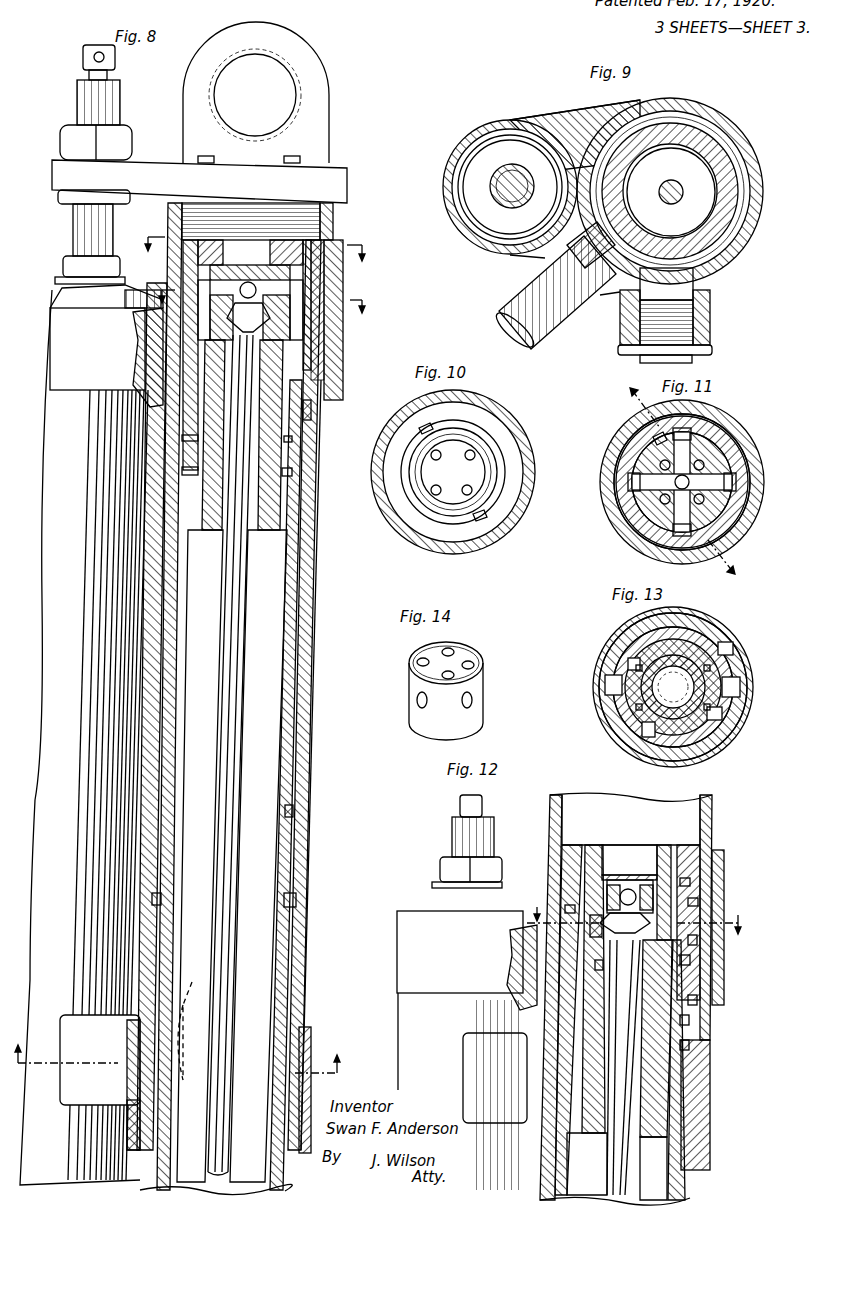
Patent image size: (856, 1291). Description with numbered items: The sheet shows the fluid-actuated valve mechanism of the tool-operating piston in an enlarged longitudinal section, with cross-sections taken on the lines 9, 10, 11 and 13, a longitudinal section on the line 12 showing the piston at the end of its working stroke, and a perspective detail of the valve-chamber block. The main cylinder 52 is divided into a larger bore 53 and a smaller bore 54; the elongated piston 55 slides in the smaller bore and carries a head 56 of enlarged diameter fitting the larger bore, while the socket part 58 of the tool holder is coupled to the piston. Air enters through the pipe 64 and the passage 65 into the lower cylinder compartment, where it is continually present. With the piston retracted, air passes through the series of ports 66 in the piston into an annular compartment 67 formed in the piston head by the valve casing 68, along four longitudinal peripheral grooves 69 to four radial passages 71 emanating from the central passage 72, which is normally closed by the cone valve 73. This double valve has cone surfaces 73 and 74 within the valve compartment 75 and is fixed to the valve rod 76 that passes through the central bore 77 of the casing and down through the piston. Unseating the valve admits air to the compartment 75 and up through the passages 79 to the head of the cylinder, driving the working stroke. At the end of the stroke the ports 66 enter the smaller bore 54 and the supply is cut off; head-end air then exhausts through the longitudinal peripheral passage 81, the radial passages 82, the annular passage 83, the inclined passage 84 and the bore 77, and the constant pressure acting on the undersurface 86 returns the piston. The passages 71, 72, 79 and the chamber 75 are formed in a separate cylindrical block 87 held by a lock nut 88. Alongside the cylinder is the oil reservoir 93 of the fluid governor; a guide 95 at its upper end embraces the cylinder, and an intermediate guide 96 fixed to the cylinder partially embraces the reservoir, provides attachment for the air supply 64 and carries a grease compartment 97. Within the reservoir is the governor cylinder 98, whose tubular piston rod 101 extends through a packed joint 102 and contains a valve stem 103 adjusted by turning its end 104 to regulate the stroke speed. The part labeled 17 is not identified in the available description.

In FIG. 8, the section line 9— 9 is at (176, 1069).
In FIG. 8, the section line 10— 10 is at (255, 239).
In FIG. 8, the section line 11— 11 is at (261, 292).
In FIG. 11, the section line 12— 12 is at (666, 490).
In FIG. 12, the section line 13— 13 is at (644, 911).
In FIG. 8, the tube 17 is at (318, 632).
In FIG. 8, the main cylinder 52 is at (328, 593).
In FIG. 9, the main cylinder 52 is at (738, 220).
In FIG. 10, the main cylinder 52 is at (394, 539).
In FIG. 11, the main cylinder 52 is at (608, 517).
In FIG. 13, the main cylinder 52 is at (625, 624).
In FIG. 12, the main cylinder 52 is at (712, 813).
In FIG. 8, the larger bore 53 is at (290, 812).
In FIG. 12, the larger bore 53 is at (689, 1020).
In FIG. 8, the smaller bore 54 is at (268, 1165).
In FIG. 12, the smaller bore 54 is at (710, 1105).
In FIG. 8, the elongated piston 55 is at (292, 709).
In FIG. 9, the elongated piston 55 is at (733, 200).
In FIG. 12, the elongated piston 55 is at (676, 1070).
In FIG. 8, the piston head 56 is at (320, 278).
In FIG. 10, the piston head 56 is at (397, 502).
In FIG. 11, the piston head 56 is at (737, 437).
In FIG. 13, the piston head 56 is at (710, 624).
In FIG. 12, the piston head 56 is at (627, 1020).
In FIG. 8, the socket part 58 is at (322, 97).
In FIG. 9, the pipe 64 is at (513, 288).
In FIG. 8, the passage 65 is at (184, 1021).
In FIG. 9, the passage 65 is at (591, 245).
In FIG. 8, the ports 66 is at (182, 438).
In FIG. 12, the ports 66 is at (689, 1045).
In FIG. 8, the annular compartment 67 is at (197, 472).
In FIG. 8, the valve casing 68 is at (285, 530).
In FIG. 10, the valve casing 68 is at (493, 500).
In FIG. 11, the valve casing 68 is at (747, 527).
In FIG. 12, the valve casing 68 is at (656, 1070).
In FIG. 8, the longitudinal peripheral grooves 69 is at (140, 323).
In FIG. 11, the longitudinal peripheral grooves 69 is at (632, 487).
In FIG. 13, the longitudinal peripheral grooves 69 is at (633, 663).
In FIG. 11, the radial passages 71 is at (645, 478).
In FIG. 14, the radial passages 71 is at (462, 702).
In FIG. 8, the central passage 72 is at (251, 282).
In FIG. 11, the central passage 72 is at (700, 470).
In FIG. 12, the central passage 72 is at (628, 897).
In FIG. 8, the cone valve 73 is at (248, 317).
In FIG. 12, the cone valve 73 is at (625, 923).
In FIG. 8, the cone surface 74 is at (320, 353).
In FIG. 8, the valve compartment 75 is at (275, 312).
In FIG. 13, the valve compartment 75 is at (676, 776).
In FIG. 12, the valve compartment 75 is at (590, 923).
In FIG. 8, the valve rod 76 is at (238, 698).
In FIG. 9, the valve rod 76 is at (672, 205).
In FIG. 12, the valve rod 76 is at (628, 1163).
In FIG. 8, the central bore 77 is at (226, 530).
In FIG. 12, the central bore 77 is at (603, 1135).
In FIG. 10, the passages 79 is at (473, 454).
In FIG. 11, the passages 79 is at (647, 460).
In FIG. 14, the passages 79 is at (444, 650).
In FIG. 12, the passages 79 is at (652, 882).
In FIG. 10, the longitudinal peripheral passage 81 is at (422, 427).
In FIG. 11, the longitudinal peripheral passage 81 is at (657, 440).
In FIG. 13, the longitudinal peripheral passage 81 is at (618, 703).
In FIG. 12, the longitudinal peripheral passage 81 is at (578, 960).
In FIG. 13, the radial passages 82 is at (612, 688).
In FIG. 12, the radial passages 82 is at (568, 913).
In FIG. 8, the annular passage 83 is at (297, 905).
In FIG. 13, the annular passage 83 is at (750, 710).
In FIG. 12, the annular passage 83 is at (697, 938).
In FIG. 13, the inclined passage 84 is at (728, 652).
In FIG. 12, the inclined passage 84 is at (690, 960).
In FIG. 8, the undersurface 86 is at (309, 410).
In FIG. 12, the undersurface 86 is at (697, 1000).
In FIG. 8, the cylindrical block 87 is at (232, 290).
In FIG. 10, the cylindrical block 87 is at (453, 472).
In FIG. 11, the cylindrical block 87 is at (713, 502).
In FIG. 13, the cylindrical block 87 is at (708, 712).
In FIG. 14, the cylindrical block 87 is at (485, 683).
In FIG. 12, the cylindrical block 87 is at (602, 877).
In FIG. 8, the lock nut 88 is at (282, 238).
In FIG. 10, the lock nut 88 is at (488, 463).
In FIG. 12, the lock nut 88 is at (618, 850).
In FIG. 8, the oil reservoir 93 is at (84, 737).
In FIG. 9, the oil reservoir 93 is at (467, 148).
In FIG. 12, the oil reservoir 93 is at (460, 1091).
In FIG. 8, the guide 95 is at (343, 373).
In FIG. 12, the guide 95 is at (560, 930).
In FIG. 8, the intermediate guide 96 is at (100, 1082).
In FIG. 9, the intermediate guide 96 is at (760, 168).
In FIG. 12, the intermediate guide 96 is at (495, 1078).
In FIG. 9, the grease compartment 97 is at (665, 315).
In FIG. 9, the governor cylinder 98 is at (460, 173).
In FIG. 9, the piston rod 101 is at (517, 168).
In FIG. 8, the packed joint 102 is at (110, 228).
In FIG. 12, the packed joint 102 is at (567, 1017).
In FIG. 9, the valve stem 103 is at (520, 202).
In FIG. 8, the end of valve stem 104 is at (115, 62).